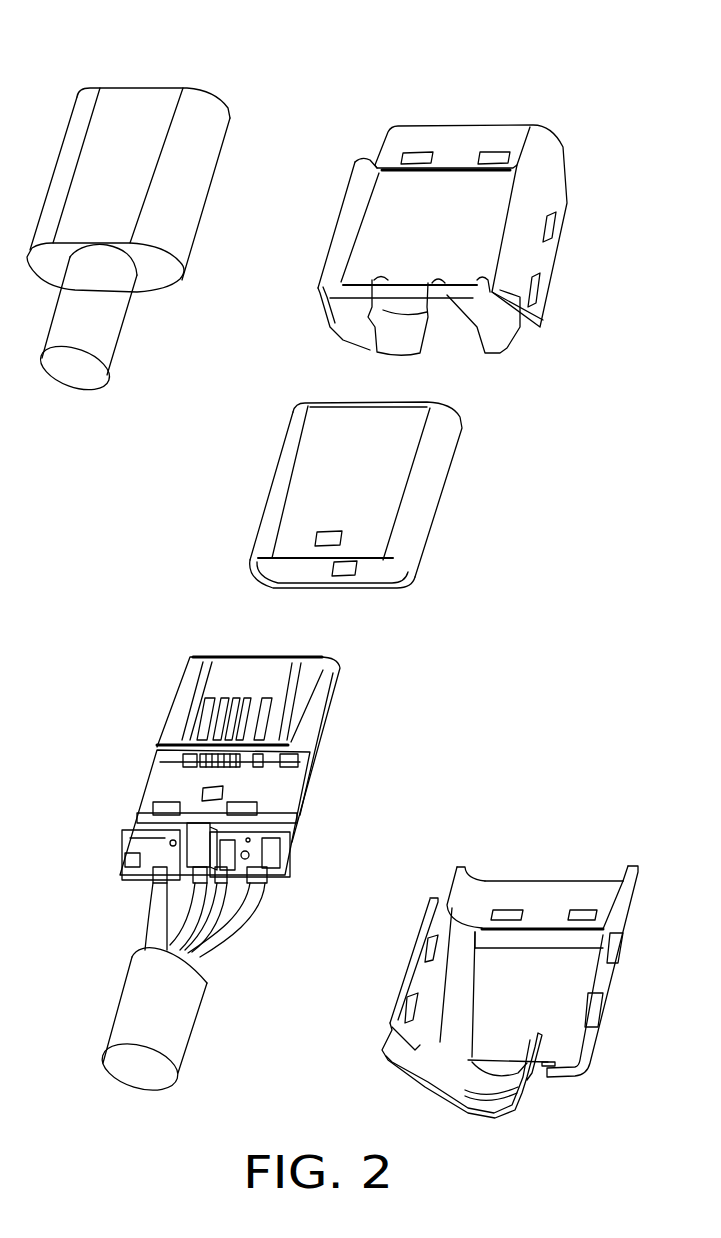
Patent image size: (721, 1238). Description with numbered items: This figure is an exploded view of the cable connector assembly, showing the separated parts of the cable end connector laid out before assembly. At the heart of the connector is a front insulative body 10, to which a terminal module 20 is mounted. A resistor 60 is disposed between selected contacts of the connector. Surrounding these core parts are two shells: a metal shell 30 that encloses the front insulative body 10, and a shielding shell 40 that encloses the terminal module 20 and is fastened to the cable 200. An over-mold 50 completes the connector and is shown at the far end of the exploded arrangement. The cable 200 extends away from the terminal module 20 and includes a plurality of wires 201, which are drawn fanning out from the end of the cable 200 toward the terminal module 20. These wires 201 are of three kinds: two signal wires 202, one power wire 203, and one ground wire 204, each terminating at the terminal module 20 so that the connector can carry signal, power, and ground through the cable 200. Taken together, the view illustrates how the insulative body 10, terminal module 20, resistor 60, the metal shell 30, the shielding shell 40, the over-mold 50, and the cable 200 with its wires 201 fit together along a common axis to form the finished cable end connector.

The front insulative body 10 is at (190, 675).
The terminal module 20 is at (165, 782).
The metal shell 30 is at (425, 487).
The shielding shell 40 is at (535, 190).
The over-mold 50 is at (145, 97).
The resistor 60 is at (178, 858).
The cable 200 is at (128, 1015).
The wires 201 is at (157, 927).
The signal wires 202 is at (250, 808).
The power wire 203 is at (172, 856).
The ground wire 204 is at (280, 847).